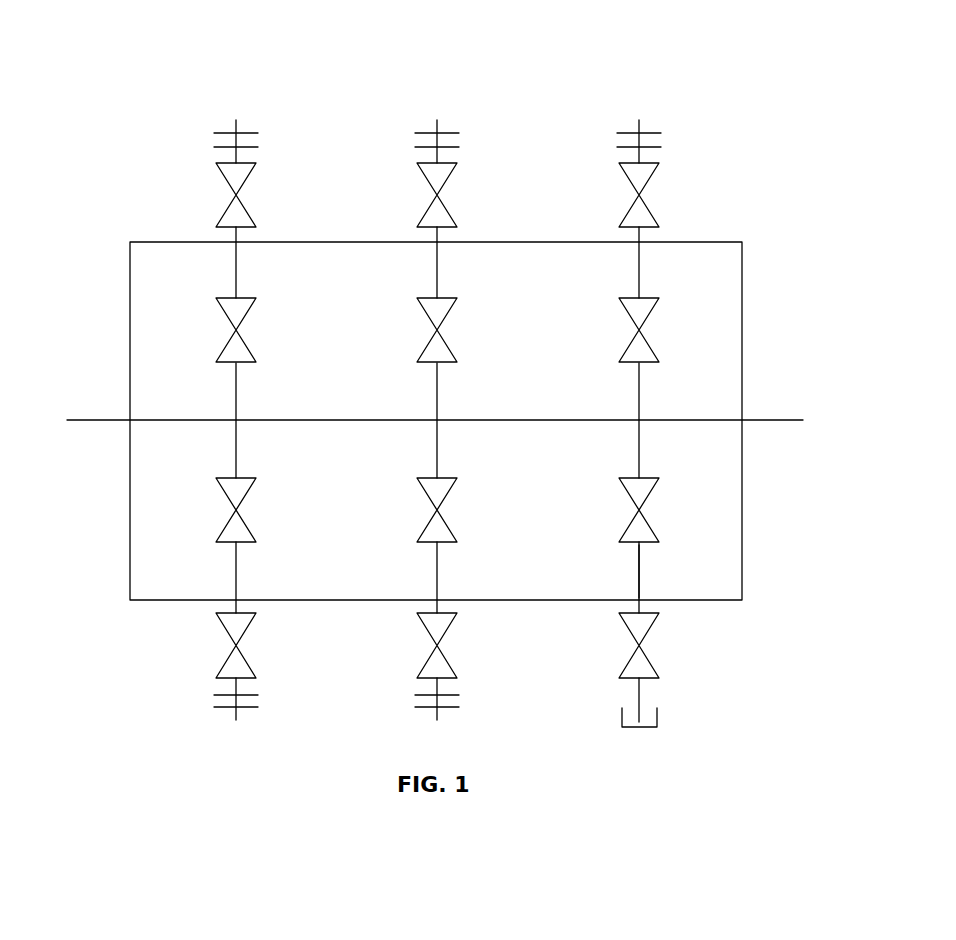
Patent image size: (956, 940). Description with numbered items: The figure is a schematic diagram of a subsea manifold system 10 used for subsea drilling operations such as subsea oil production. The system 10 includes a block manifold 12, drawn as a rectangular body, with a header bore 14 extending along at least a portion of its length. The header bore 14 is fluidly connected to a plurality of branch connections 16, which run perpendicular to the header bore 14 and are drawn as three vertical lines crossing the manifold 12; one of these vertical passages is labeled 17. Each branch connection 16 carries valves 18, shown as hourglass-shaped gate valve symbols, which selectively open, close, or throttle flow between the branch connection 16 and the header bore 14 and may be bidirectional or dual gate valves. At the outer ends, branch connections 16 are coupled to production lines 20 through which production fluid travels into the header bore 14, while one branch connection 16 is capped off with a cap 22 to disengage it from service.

The subsea manifold system 10 is at (688, 50).
The block manifold 12 is at (130, 265).
The header bore 14 is at (152, 420).
The branch connection 16 is at (237, 405).
The outlet passage 17 is at (640, 582).
The valve 18 is at (247, 177).
The production line 20 is at (212, 139).
The cap 22 is at (658, 712).